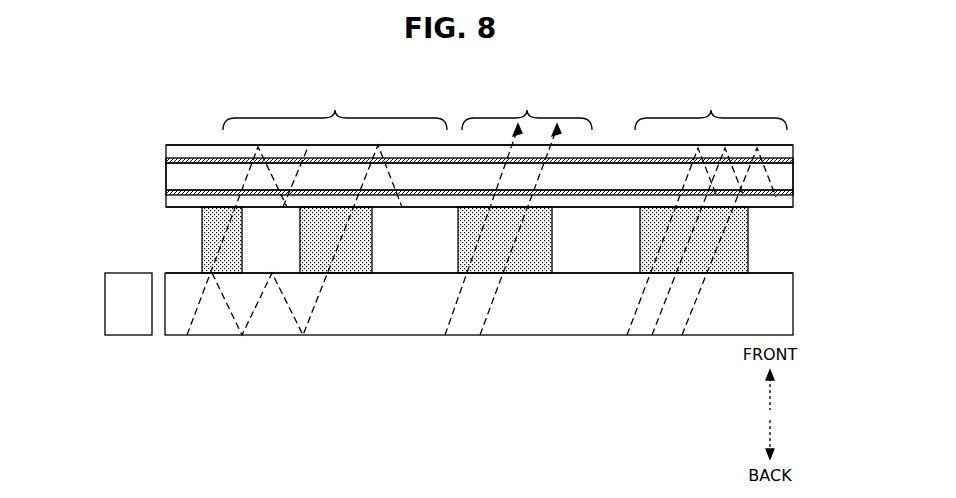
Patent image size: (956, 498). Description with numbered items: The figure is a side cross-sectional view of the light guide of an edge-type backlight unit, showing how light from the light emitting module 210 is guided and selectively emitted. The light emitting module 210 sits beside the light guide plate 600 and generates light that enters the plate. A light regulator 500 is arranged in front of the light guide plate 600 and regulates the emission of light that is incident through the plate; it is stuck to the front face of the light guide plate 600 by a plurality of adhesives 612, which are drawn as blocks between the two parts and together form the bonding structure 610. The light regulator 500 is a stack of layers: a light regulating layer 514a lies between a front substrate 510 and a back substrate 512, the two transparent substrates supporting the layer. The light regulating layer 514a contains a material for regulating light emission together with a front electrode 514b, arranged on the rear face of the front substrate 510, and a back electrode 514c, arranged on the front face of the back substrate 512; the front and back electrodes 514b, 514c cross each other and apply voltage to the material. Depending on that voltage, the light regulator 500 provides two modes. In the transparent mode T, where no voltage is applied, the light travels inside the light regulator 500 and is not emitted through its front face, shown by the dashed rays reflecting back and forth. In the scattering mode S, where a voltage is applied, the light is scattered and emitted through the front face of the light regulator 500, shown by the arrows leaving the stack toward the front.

The light regulator 500 is at (802, 145).
The front substrate 510 is at (791, 145).
The back substrate 512 is at (793, 207).
The light regulating layer 514a is at (166, 176).
The front electrode 514b is at (166, 160).
The back electrode 514c is at (166, 193).
The support structure 610 is at (157, 207).
The adhesives 612 is at (242, 240).
The light guide plate 600 is at (793, 300).
The light emitting module 210 is at (105, 302).
The transparent mode T is at (505, 108).
The scattering mode S is at (527, 109).